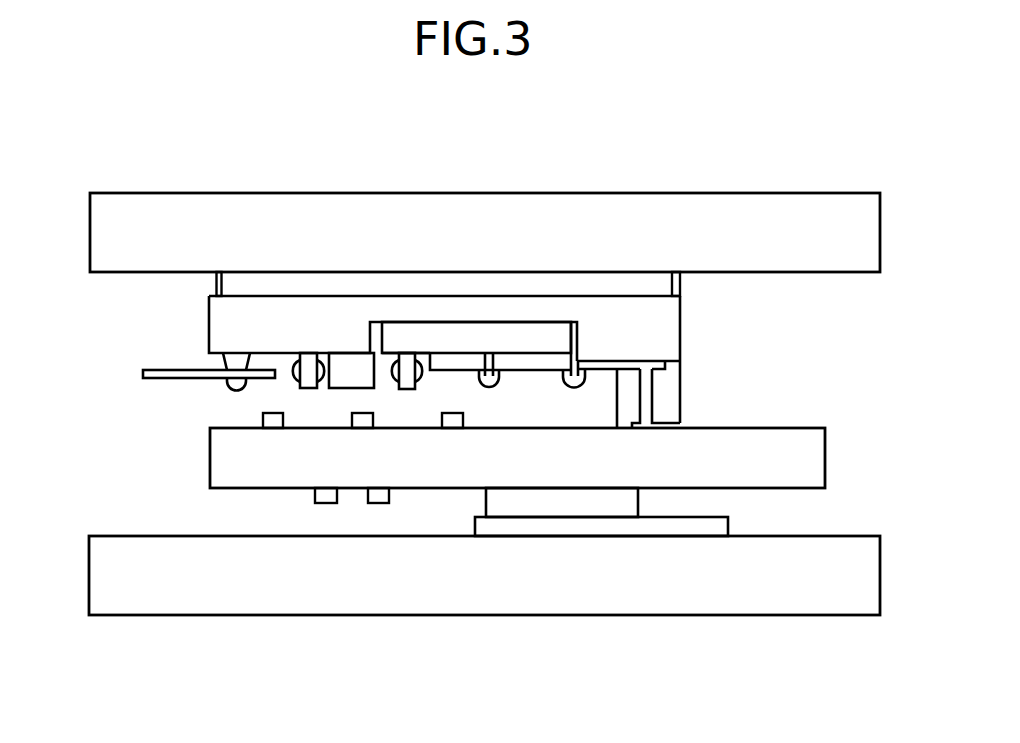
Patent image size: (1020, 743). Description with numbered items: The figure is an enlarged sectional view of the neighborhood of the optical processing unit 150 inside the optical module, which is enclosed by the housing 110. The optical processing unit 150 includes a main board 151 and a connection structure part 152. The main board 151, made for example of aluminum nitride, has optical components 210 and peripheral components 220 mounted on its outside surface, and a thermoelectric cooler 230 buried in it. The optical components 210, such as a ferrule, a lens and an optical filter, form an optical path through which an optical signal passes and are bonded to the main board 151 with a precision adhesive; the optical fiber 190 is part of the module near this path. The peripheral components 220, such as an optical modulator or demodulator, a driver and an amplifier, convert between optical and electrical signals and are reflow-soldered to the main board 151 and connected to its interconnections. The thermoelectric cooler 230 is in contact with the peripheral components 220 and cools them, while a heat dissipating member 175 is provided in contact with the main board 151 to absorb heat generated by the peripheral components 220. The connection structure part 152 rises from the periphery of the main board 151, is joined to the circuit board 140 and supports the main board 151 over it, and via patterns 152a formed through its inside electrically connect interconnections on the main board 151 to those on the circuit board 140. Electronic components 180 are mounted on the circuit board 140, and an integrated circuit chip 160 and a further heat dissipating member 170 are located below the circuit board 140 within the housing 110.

The housing 110 is at (750, 193).
The circuit board 140 is at (826, 459).
The optical processing unit 150 is at (434, 350).
The main board 151 is at (668, 332).
The connection structure part 152 is at (665, 373).
The via patterns 152a is at (660, 403).
The integrated circuit (IC) chip 160 is at (627, 498).
The heat dissipating member 170 is at (602, 526).
The heat dissipating member 175 is at (663, 285).
The electronic components 180 is at (273, 420).
The optical fiber 190 is at (163, 370).
The optical components 210 is at (338, 328).
The peripheral components 220 is at (588, 353).
The thermoelectric cooler (TEC) 230 is at (476, 338).